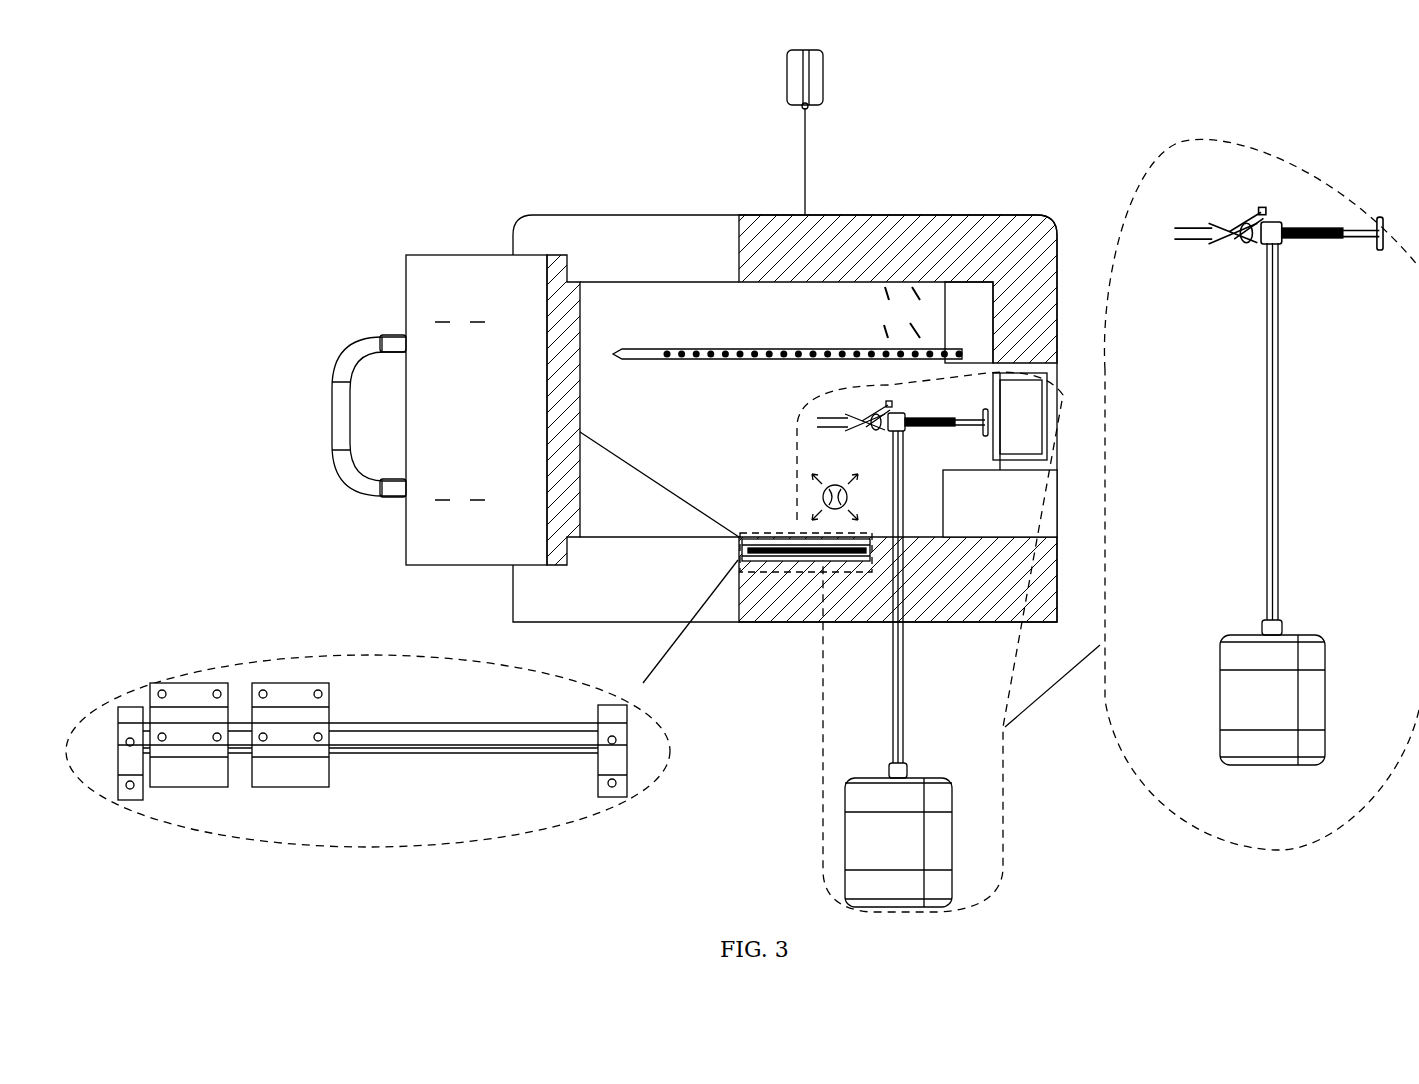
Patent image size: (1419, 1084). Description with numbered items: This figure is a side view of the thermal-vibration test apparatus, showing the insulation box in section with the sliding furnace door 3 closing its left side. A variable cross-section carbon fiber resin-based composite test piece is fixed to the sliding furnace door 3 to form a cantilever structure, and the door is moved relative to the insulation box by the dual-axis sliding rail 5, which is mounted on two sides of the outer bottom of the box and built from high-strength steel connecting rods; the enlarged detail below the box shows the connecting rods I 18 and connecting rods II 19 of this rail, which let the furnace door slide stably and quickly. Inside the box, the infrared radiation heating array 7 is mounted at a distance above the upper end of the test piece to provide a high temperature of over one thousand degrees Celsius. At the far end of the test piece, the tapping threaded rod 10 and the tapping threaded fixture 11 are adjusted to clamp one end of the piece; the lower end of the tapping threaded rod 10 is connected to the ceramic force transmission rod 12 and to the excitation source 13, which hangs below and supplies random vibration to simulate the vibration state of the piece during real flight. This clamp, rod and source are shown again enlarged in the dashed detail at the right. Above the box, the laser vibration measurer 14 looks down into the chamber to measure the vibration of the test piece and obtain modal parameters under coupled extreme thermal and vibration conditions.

The sliding furnace door 3 is at (427, 513).
The dual-axis sliding rail 5 is at (778, 550).
The infrared radiation heating array 7 is at (725, 343).
The tapping threaded rod 10 is at (1352, 240).
The tapping threaded fixture 11 is at (1218, 240).
The ceramic force transmission rod 12 is at (1278, 530).
The excitation source 13 is at (1316, 700).
The laser vibration measurer 14 is at (815, 95).
The connecting rods I 18 is at (190, 775).
The connecting rods II 19 is at (295, 775).